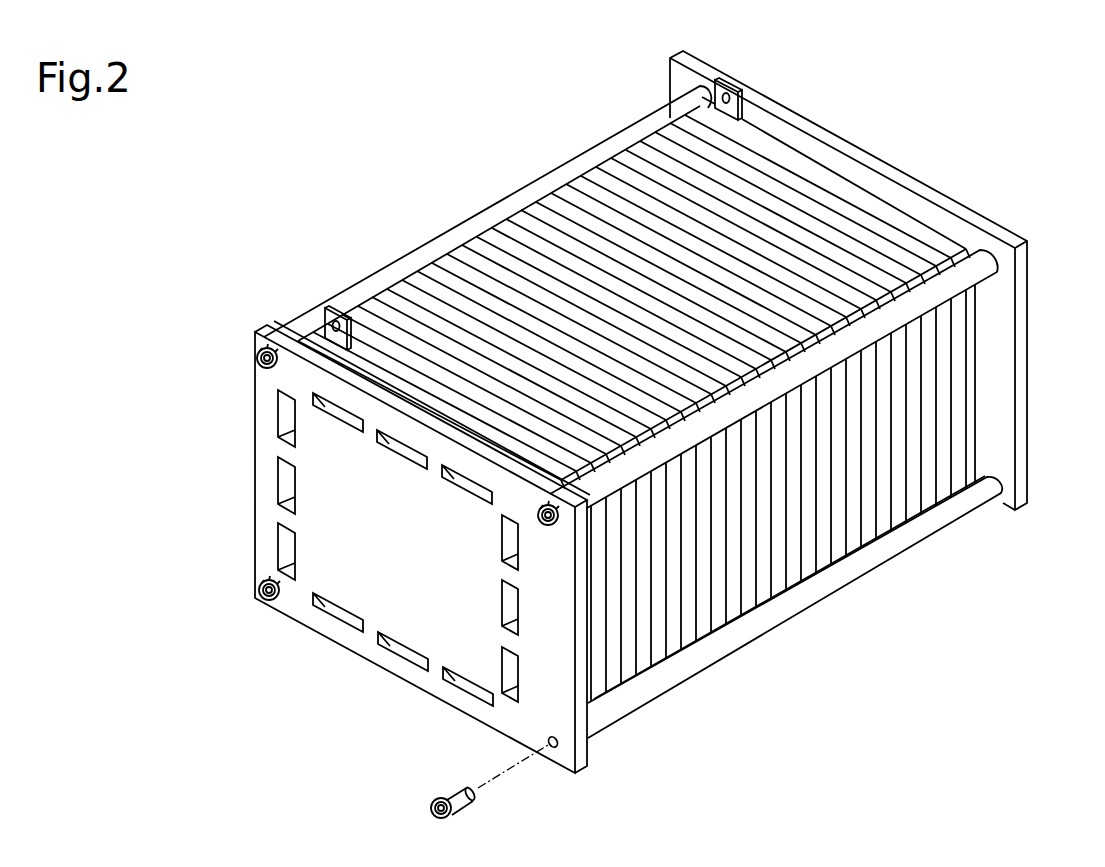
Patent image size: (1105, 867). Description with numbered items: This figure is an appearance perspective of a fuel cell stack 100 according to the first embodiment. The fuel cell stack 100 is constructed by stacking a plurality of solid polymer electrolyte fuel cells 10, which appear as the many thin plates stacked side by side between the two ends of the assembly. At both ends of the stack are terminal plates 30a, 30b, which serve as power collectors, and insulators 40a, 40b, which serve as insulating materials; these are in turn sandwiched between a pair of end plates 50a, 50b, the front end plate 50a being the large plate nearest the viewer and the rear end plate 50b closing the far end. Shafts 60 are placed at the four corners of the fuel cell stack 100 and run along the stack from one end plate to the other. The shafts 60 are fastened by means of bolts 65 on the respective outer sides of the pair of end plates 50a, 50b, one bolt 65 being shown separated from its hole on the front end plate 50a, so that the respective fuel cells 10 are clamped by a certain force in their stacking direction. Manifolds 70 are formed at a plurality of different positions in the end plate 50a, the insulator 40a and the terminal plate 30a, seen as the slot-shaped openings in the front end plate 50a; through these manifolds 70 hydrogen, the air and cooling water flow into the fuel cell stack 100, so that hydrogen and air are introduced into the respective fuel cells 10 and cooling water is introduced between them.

The fuel cell stack 100 is at (1008, 91).
The solid polymer electrolyte fuel cell 10 is at (555, 195).
The terminal plate 30a is at (318, 322).
The terminal plate 30b is at (714, 100).
The insulator 40a is at (371, 366).
The insulator 40b is at (795, 145).
The end plate 50a is at (257, 330).
The end plate 50b is at (872, 158).
The shaft 60 is at (673, 680).
The bolt 65 is at (258, 352).
The manifold 70 is at (280, 547).